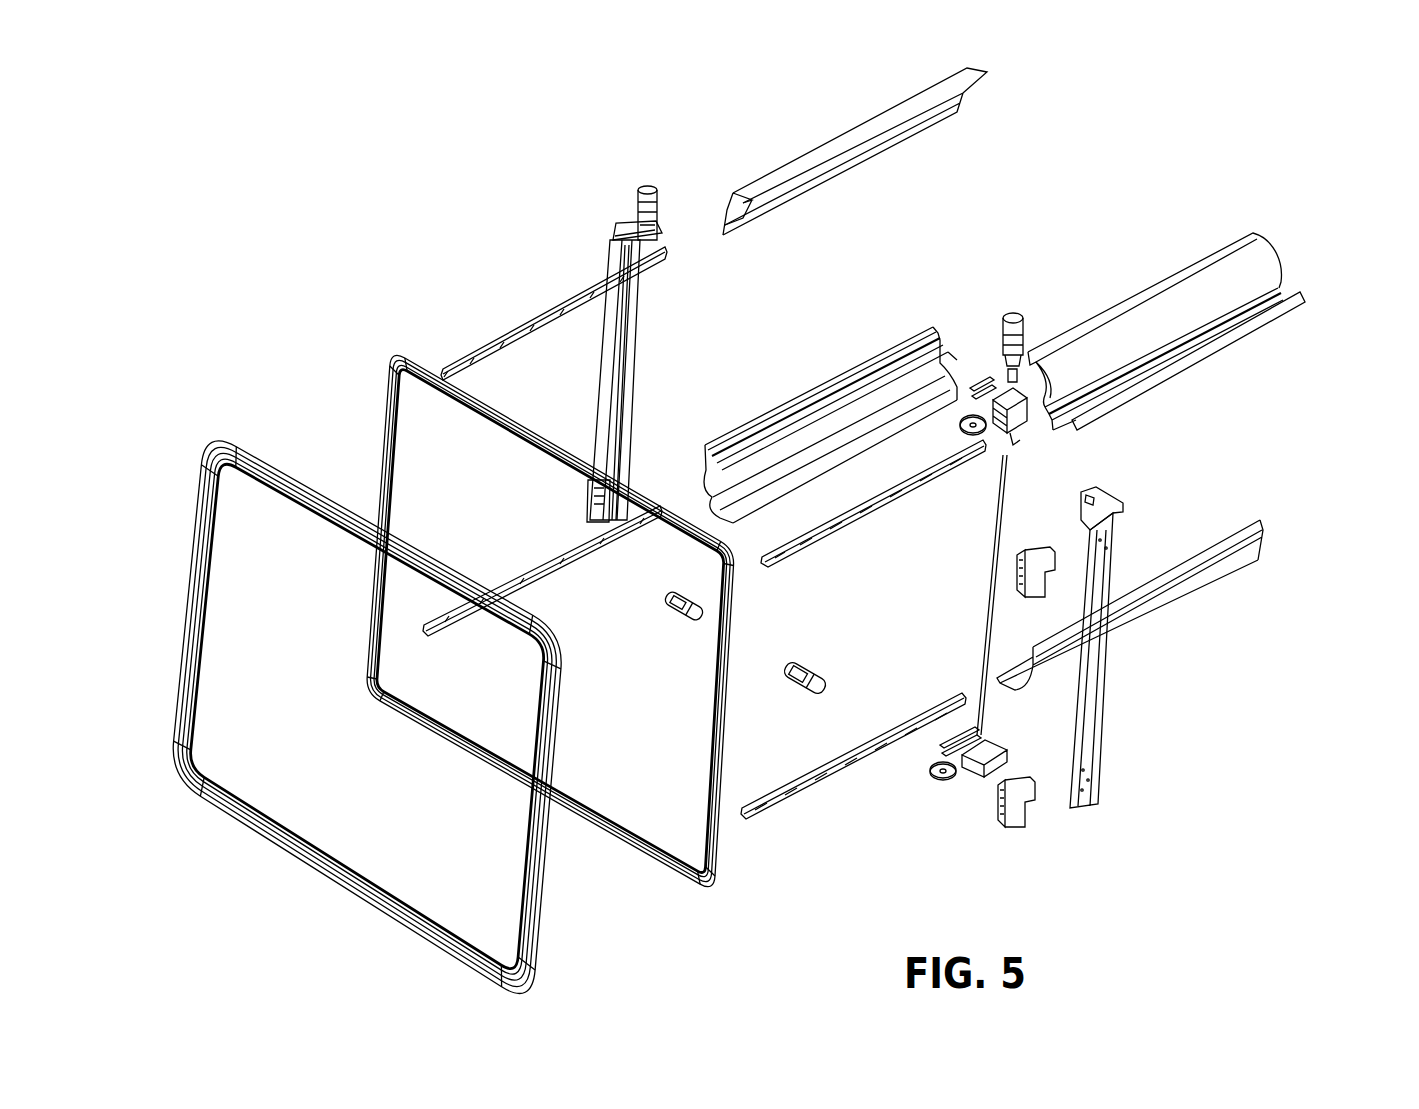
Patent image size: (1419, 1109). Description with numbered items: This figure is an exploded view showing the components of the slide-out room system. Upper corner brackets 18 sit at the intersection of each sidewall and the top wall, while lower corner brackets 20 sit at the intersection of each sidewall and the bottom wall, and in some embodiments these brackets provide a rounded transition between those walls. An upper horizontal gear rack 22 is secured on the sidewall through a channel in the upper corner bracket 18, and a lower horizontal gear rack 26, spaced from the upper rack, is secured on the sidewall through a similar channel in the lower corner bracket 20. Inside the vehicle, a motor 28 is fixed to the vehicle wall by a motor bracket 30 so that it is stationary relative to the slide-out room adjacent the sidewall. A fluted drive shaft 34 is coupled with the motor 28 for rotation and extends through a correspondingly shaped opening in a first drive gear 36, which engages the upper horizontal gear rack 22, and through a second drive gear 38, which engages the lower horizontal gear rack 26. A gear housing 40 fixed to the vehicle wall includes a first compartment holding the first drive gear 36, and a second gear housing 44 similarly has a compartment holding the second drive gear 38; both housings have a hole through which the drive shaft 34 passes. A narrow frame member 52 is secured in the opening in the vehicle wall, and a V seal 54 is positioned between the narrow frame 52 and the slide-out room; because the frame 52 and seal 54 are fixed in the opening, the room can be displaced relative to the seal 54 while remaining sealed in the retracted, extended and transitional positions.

The upper corner bracket 18 is at (847, 140).
The lower corner bracket 20 is at (772, 417).
The upper horizontal gear rack 22 is at (557, 310).
The lower horizontal gear rack 26 is at (518, 548).
The motor 28 is at (1015, 323).
The motor bracket 30 is at (605, 372).
The drive shaft 34 is at (637, 323).
The first drive gear 36 is at (960, 420).
The second drive gear 38 is at (932, 768).
The gear housing 40 is at (1023, 400).
The second gear housing 44 is at (983, 743).
The narrow frame member 52 is at (202, 795).
The V seal 54 is at (390, 397).